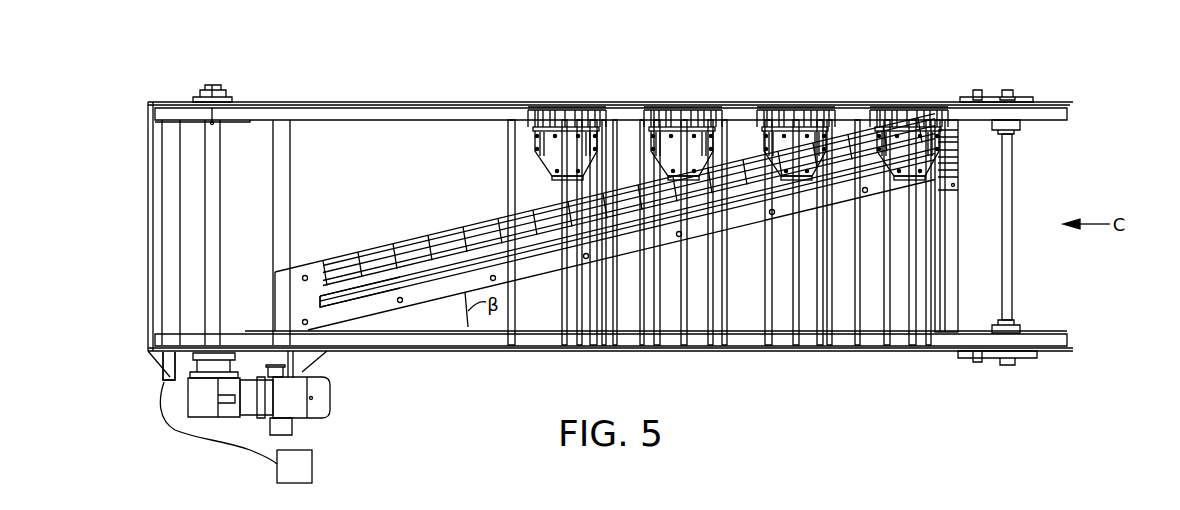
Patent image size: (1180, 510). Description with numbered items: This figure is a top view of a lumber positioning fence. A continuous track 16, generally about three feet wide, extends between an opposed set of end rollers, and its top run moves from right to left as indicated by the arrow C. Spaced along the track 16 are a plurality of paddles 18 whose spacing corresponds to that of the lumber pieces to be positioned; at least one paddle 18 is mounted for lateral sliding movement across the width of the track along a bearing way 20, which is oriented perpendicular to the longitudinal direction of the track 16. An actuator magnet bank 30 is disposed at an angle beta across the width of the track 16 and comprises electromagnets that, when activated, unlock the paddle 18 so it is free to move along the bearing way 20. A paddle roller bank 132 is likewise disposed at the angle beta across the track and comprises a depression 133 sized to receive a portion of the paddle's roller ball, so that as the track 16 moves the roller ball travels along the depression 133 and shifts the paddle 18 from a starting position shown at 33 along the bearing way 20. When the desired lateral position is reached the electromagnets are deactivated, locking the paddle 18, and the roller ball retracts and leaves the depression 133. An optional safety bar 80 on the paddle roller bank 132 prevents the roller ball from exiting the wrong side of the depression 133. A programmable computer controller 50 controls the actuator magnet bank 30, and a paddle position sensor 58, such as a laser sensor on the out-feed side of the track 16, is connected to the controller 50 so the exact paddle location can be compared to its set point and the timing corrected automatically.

The continuous track 16 is at (512, 337).
The paddle 18 is at (550, 155).
The bearing way 20 is at (595, 308).
The actuator magnet bank 30 is at (352, 266).
The starting position 33 is at (910, 110).
The programmable computer controller 50 is at (312, 465).
The paddle position sensor 58 is at (160, 376).
The safety bar 80 is at (348, 302).
The paddle roller bank 132 is at (318, 298).
The depression 133 is at (442, 273).